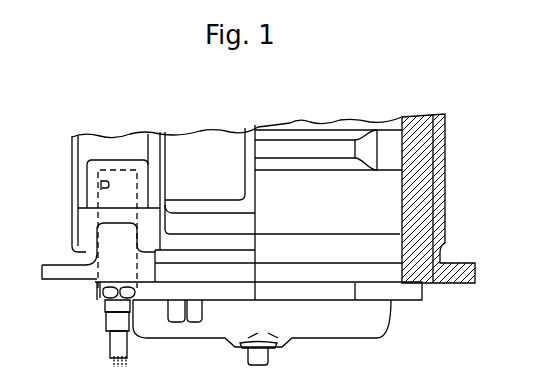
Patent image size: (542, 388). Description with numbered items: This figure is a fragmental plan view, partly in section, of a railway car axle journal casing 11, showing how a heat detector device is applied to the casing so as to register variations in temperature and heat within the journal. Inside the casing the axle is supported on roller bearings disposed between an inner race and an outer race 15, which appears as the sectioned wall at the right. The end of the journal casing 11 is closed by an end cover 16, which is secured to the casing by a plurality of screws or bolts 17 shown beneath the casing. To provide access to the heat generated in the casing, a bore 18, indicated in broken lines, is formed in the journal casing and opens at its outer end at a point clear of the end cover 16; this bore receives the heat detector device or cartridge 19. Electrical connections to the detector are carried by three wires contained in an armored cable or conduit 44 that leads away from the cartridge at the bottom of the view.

The axle journal casing 11 is at (102, 162).
The outer race 15 is at (386, 190).
The end cover 16 is at (373, 313).
The screws or bolts 17 is at (177, 316).
The bore 18 is at (96, 190).
The heat detector device or cartridge 19 is at (92, 297).
The armored cable or conduit 44 is at (112, 345).